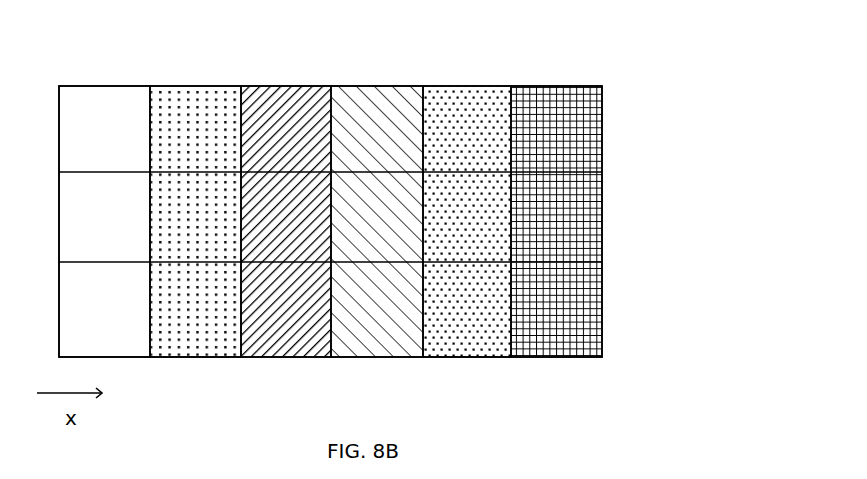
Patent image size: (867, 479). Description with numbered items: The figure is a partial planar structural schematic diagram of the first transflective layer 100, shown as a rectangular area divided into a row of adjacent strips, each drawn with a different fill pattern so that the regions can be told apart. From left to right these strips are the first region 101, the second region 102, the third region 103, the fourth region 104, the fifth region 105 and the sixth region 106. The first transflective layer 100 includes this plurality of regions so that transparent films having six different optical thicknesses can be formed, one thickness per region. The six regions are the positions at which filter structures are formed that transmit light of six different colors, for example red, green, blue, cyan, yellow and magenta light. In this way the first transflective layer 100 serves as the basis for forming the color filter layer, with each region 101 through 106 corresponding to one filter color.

The first transflective layer 100 is at (373, 221).
The first region 101 is at (128, 199).
The second region 102 is at (226, 200).
The third region 103 is at (308, 204).
The fourth region 104 is at (404, 200).
The fifth region 105 is at (487, 201).
The sixth region 106 is at (577, 200).